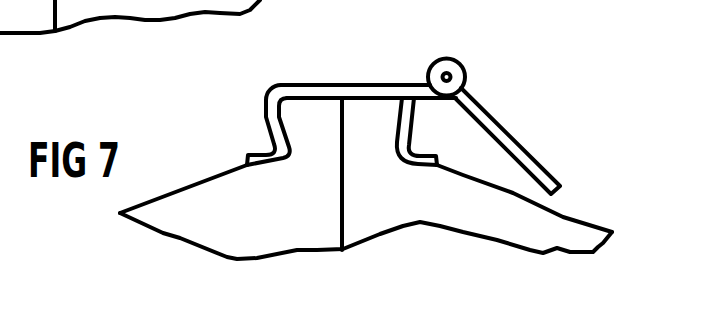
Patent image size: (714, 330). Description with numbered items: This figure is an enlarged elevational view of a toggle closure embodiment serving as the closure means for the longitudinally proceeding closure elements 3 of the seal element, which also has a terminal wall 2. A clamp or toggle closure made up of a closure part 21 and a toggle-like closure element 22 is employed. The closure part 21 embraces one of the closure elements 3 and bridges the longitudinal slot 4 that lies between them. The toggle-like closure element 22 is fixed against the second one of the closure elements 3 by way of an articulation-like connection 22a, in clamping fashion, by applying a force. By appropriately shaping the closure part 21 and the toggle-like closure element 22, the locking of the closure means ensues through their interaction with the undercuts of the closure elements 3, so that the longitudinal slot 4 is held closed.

The terminal wall 2 is at (242, 240).
The closure elements 3 is at (302, 107).
The longitudinal slot 4 is at (344, 157).
The closure part 21 is at (370, 95).
The toggle-like closure element 22 is at (485, 113).
The articulation-like connection 22a is at (443, 58).